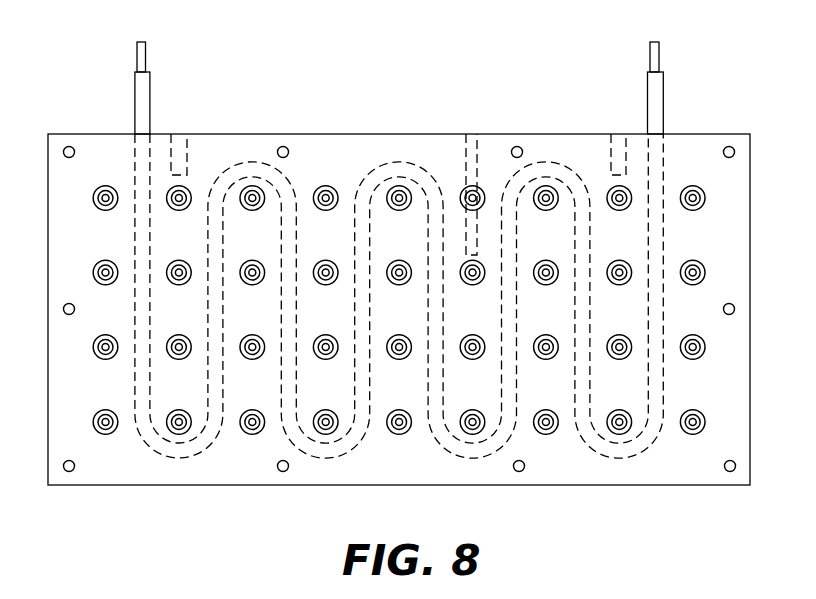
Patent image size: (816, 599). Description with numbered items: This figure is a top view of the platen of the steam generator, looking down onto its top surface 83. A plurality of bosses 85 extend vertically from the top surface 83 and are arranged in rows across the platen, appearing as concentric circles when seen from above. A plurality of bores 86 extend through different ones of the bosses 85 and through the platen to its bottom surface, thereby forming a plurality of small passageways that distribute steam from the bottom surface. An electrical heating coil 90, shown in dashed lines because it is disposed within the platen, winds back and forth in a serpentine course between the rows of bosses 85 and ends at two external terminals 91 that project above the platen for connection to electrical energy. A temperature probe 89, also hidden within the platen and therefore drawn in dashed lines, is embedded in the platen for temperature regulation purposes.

The top surface 83 is at (326, 148).
The bosses 85 is at (264, 192).
The bores 86 is at (252, 196).
The temperature probe 89 is at (472, 134).
The electrical heating coil 90 is at (400, 176).
The external terminals 91 is at (145, 57).